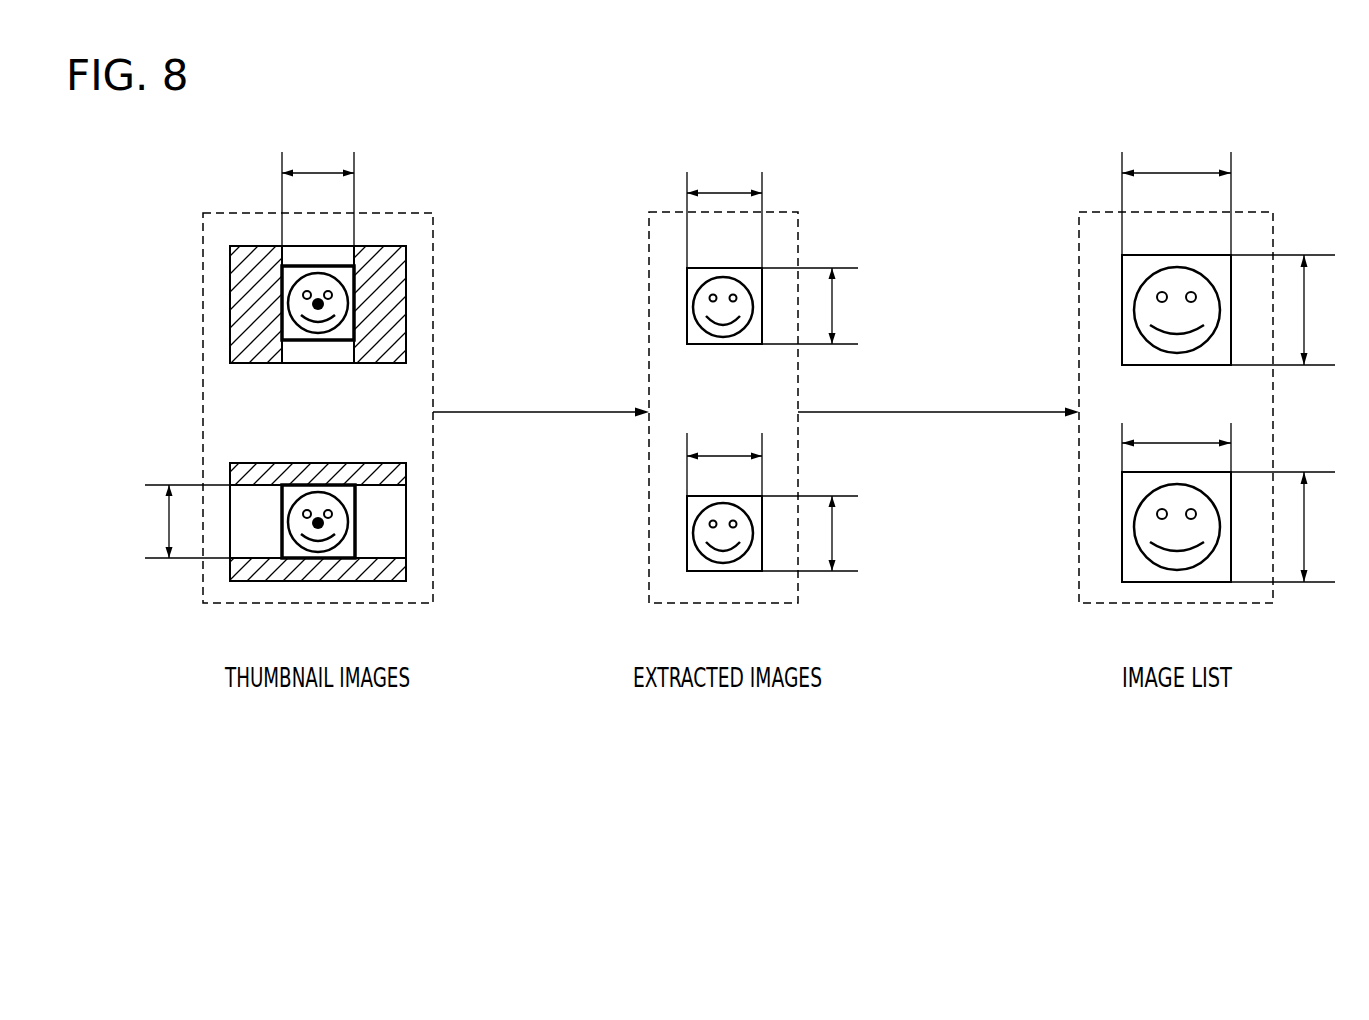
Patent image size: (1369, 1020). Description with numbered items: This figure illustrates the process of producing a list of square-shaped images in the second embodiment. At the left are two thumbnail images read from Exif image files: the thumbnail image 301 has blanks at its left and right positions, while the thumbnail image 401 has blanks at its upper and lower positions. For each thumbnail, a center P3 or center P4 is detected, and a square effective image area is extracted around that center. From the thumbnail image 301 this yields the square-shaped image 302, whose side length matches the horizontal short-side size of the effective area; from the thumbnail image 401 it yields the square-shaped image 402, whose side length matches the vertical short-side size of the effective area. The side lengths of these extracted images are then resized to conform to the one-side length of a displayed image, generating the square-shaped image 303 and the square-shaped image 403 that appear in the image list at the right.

The thumbnail image 301 is at (230, 271).
The thumbnail image 401 is at (230, 480).
The center P3 is at (324, 302).
The center P4 is at (324, 521).
The square-shaped image 302 is at (687, 302).
The square-shaped image 402 is at (687, 527).
The square-shaped image 303 is at (1122, 276).
The square-shaped image 403 is at (1122, 496).